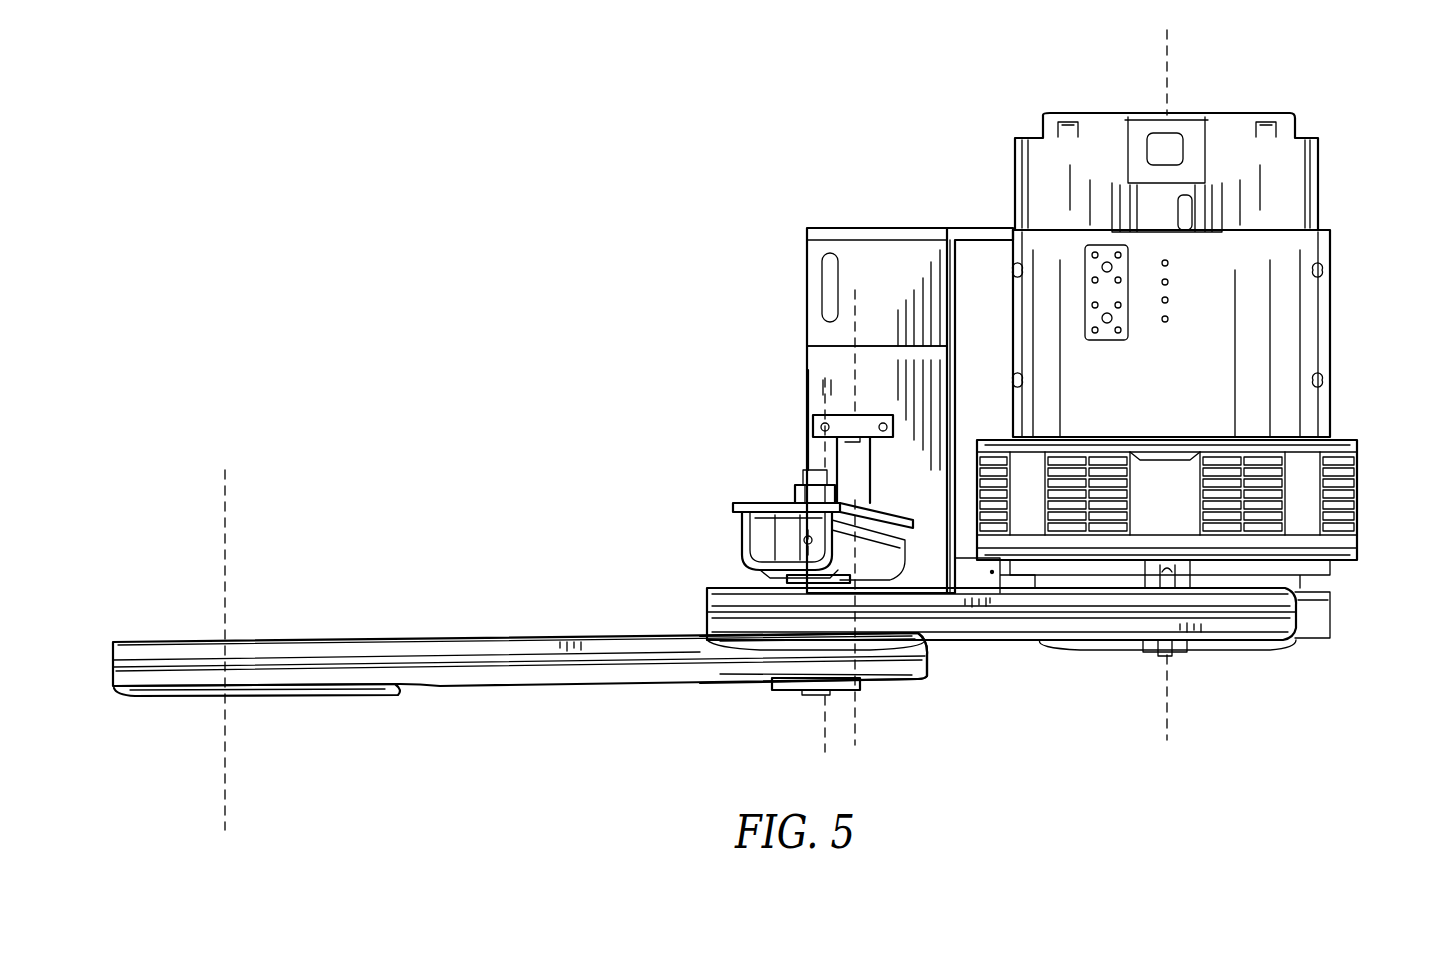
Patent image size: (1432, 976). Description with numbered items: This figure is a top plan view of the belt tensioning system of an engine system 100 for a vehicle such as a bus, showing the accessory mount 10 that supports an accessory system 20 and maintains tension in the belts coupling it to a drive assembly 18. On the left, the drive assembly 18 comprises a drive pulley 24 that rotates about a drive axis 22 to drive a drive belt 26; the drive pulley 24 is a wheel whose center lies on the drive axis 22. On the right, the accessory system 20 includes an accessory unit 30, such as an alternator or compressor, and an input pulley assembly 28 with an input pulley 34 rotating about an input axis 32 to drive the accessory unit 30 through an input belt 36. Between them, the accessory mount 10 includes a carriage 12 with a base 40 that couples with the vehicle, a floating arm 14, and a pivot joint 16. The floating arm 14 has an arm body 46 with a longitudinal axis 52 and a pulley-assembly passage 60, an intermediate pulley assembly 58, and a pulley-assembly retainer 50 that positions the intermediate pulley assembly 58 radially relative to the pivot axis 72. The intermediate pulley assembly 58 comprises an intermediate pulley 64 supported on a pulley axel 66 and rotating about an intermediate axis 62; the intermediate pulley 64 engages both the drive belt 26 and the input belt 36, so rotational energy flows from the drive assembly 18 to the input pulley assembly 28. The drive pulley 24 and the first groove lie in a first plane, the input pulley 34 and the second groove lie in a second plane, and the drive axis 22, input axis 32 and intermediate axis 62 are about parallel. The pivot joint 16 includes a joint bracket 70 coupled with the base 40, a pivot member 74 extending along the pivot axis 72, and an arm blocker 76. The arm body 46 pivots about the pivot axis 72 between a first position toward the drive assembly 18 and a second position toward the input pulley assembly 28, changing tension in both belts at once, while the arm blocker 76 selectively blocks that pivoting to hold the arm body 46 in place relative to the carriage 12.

The engine system 100 is at (960, 52).
The accessory mount 10 is at (584, 347).
The carriage 12 is at (957, 224).
The floating arm 14 is at (742, 557).
The pivot joint 16 is at (873, 408).
The drive assembly 18 is at (280, 608).
The accessory system 20 is at (1338, 376).
The drive axis 22 is at (228, 800).
The drive pulley 24 is at (393, 696).
The drive belt 26 is at (390, 653).
The input pulley assembly 28 is at (1137, 652).
The accessory unit 30 is at (1310, 262).
The input axis 32 is at (1168, 703).
The input pulley 34 is at (1210, 640).
The input belt 36 is at (1017, 622).
The base 40 is at (1003, 243).
The arm body 46 is at (871, 550).
The pulley-assembly retainer 50 is at (780, 505).
The longitudinal axis 52 is at (805, 538).
The intermediate pulley assembly 58 is at (745, 690).
The pulley-assembly passage 60 is at (790, 580).
The intermediate axis 62 is at (825, 745).
The intermediate pulley 64 is at (913, 675).
The pulley axel 66 is at (795, 500).
The joint bracket 70 is at (883, 424).
The pivot axis 72 is at (857, 732).
The pivot member 74 is at (855, 468).
The arm blocker 76 is at (953, 577).